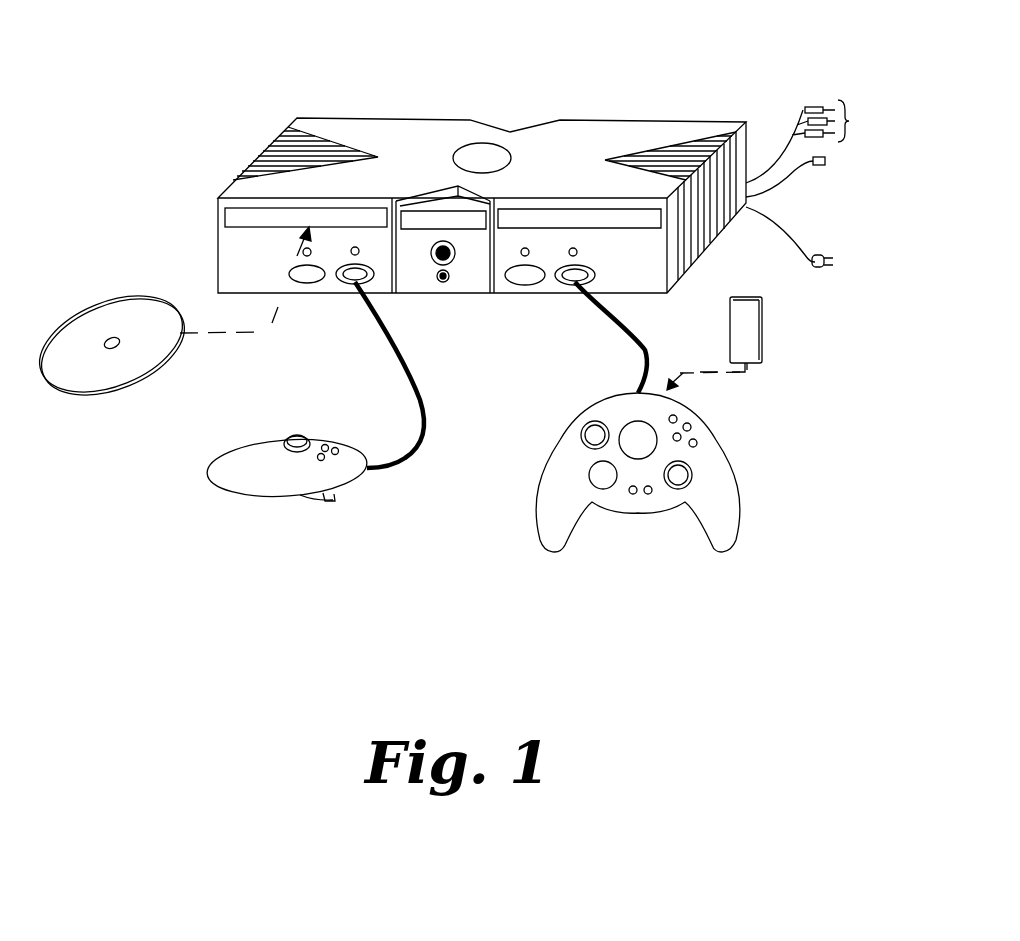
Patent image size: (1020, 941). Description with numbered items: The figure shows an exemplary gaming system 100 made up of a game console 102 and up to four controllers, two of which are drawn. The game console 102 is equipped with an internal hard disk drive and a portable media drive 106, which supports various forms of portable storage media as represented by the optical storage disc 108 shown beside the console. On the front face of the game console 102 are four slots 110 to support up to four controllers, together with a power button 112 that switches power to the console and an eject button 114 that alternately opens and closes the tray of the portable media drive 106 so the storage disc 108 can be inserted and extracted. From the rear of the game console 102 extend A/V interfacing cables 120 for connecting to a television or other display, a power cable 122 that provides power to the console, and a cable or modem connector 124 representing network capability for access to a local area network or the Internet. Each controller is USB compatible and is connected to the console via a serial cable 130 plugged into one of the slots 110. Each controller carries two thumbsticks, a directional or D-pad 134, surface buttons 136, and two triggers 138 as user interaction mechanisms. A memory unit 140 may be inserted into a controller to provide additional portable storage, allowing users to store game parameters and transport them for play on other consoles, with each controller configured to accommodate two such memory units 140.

The gaming system 100 is at (635, 33).
The game console 102 is at (338, 118).
The portable media drive 106 is at (233, 217).
The optical storage disc 108 is at (125, 386).
The slots 110 is at (355, 290).
The power button 112 is at (444, 283).
The eject button 114 is at (443, 241).
The A/V interfacing cables 120 is at (815, 105).
The power cable 122 is at (815, 270).
The cable or modem connector 124 is at (788, 182).
The serial cables 130 is at (418, 381).
The D-pad 134 is at (590, 473).
The surface buttons 136 is at (688, 427).
The triggers 138 is at (337, 502).
The memory unit 140 is at (763, 330).